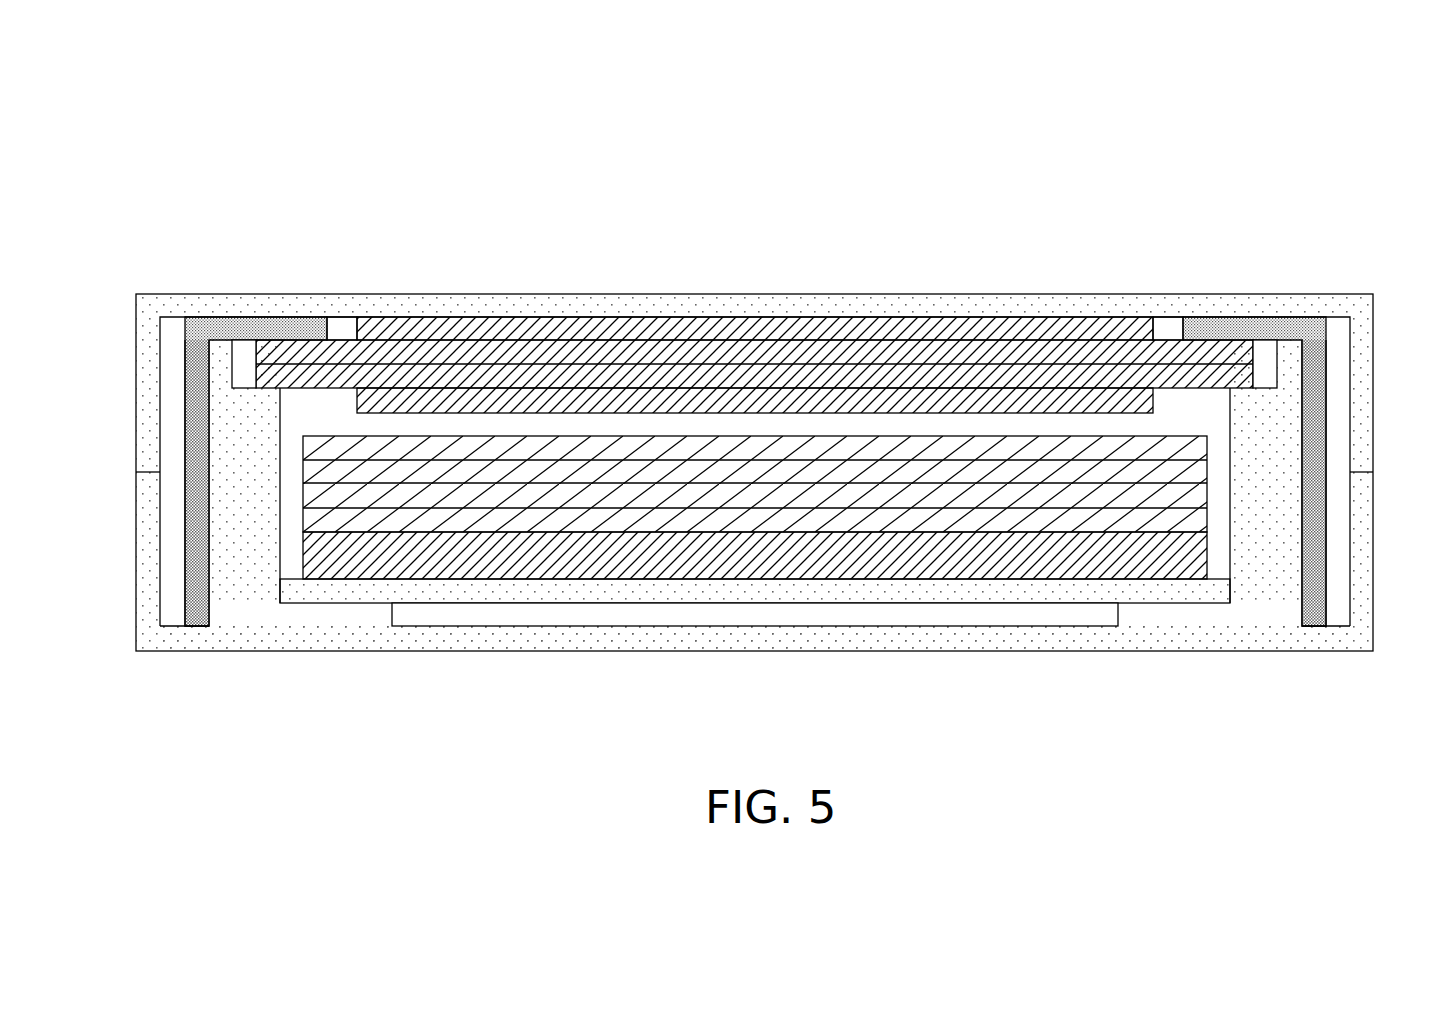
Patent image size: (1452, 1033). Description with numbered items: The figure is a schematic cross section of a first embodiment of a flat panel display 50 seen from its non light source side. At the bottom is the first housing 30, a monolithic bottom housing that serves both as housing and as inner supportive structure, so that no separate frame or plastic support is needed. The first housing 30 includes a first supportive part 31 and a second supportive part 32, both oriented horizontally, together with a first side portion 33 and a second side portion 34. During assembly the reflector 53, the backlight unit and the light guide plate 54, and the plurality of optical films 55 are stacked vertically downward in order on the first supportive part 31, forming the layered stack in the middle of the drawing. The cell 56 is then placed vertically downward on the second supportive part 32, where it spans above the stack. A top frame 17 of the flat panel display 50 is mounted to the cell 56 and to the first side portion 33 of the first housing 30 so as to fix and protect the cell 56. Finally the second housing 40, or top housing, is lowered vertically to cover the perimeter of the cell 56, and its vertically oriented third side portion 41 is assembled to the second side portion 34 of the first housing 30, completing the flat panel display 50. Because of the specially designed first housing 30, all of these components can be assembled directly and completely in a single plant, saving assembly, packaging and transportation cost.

The flat panel display 50 is at (1280, 152).
The second housing 40 is at (1083, 283).
The first housing 30 is at (1245, 667).
The first supportive part 31 is at (360, 623).
The second supportive part 32 is at (258, 408).
The first side portion 33 is at (217, 357).
The second side portion 34 is at (1360, 538).
The third side portion 41 is at (1360, 438).
The top frame 17 is at (212, 326).
The reflector 53 is at (687, 595).
The light guide plate 54 is at (632, 558).
The optical films 55 is at (862, 520).
The cell 56 is at (952, 363).